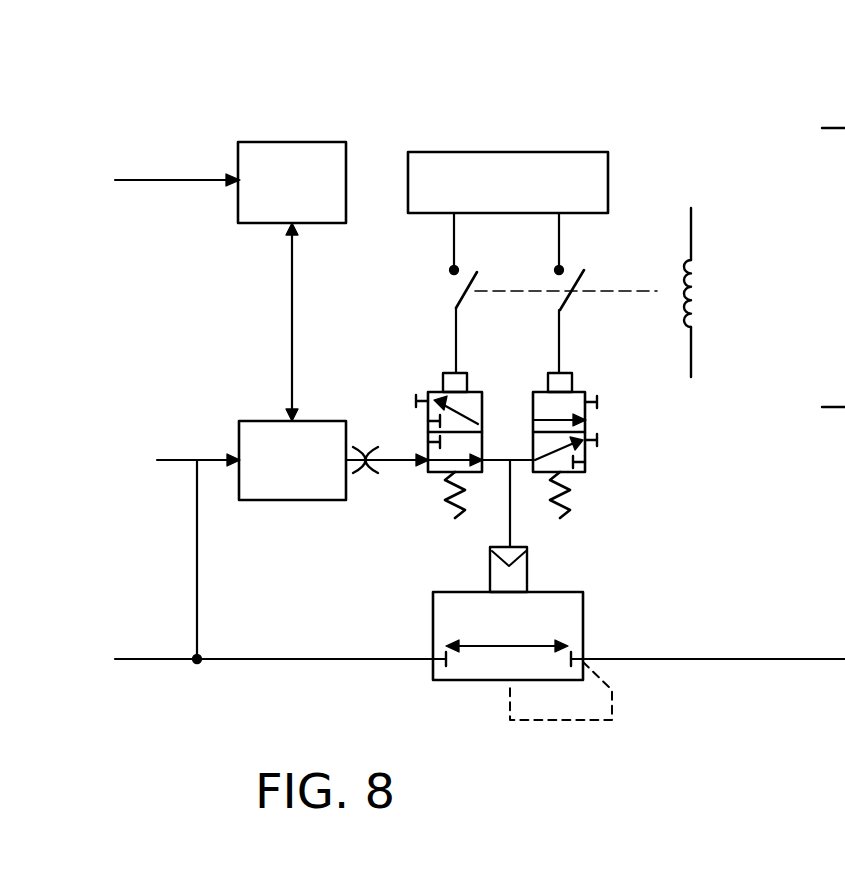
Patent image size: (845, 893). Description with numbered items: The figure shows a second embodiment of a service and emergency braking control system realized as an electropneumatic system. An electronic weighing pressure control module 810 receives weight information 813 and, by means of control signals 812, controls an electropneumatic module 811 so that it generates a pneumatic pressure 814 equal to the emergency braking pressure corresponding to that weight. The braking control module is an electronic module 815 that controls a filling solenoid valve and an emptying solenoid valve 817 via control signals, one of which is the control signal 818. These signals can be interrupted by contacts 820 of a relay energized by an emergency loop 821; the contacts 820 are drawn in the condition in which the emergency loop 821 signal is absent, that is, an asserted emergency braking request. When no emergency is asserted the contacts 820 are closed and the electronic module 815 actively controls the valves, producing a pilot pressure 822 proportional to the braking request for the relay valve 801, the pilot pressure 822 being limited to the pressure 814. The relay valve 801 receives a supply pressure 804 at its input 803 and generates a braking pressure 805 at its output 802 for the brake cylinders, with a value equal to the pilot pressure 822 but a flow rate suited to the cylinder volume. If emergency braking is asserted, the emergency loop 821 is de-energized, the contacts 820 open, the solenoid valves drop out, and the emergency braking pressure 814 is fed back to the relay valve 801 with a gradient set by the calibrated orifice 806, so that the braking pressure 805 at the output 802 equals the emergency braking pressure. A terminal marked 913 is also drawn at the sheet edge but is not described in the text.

The relay valve 801 is at (583, 592).
The output 802 is at (600, 659).
The input 803 is at (434, 659).
The supply pressure 804 is at (157, 659).
The braking pressure 805 is at (778, 659).
The calibrated orifice 806 is at (368, 475).
The electronic weighing pressure control module 810 is at (292, 142).
The electropneumatic module 811 is at (252, 421).
The control signals 812 is at (290, 325).
The weight information 813 is at (155, 180).
The pneumatic pressure 814 is at (393, 460).
The electronic module 815 is at (543, 152).
The emptying solenoid valve 817 is at (588, 393).
The control signal 818 is at (484, 374).
The contacts 820 is at (566, 284).
The emergency loop 821 is at (697, 292).
The pilot pressure 822 is at (508, 520).
The connection terminal 913 is at (838, 128).